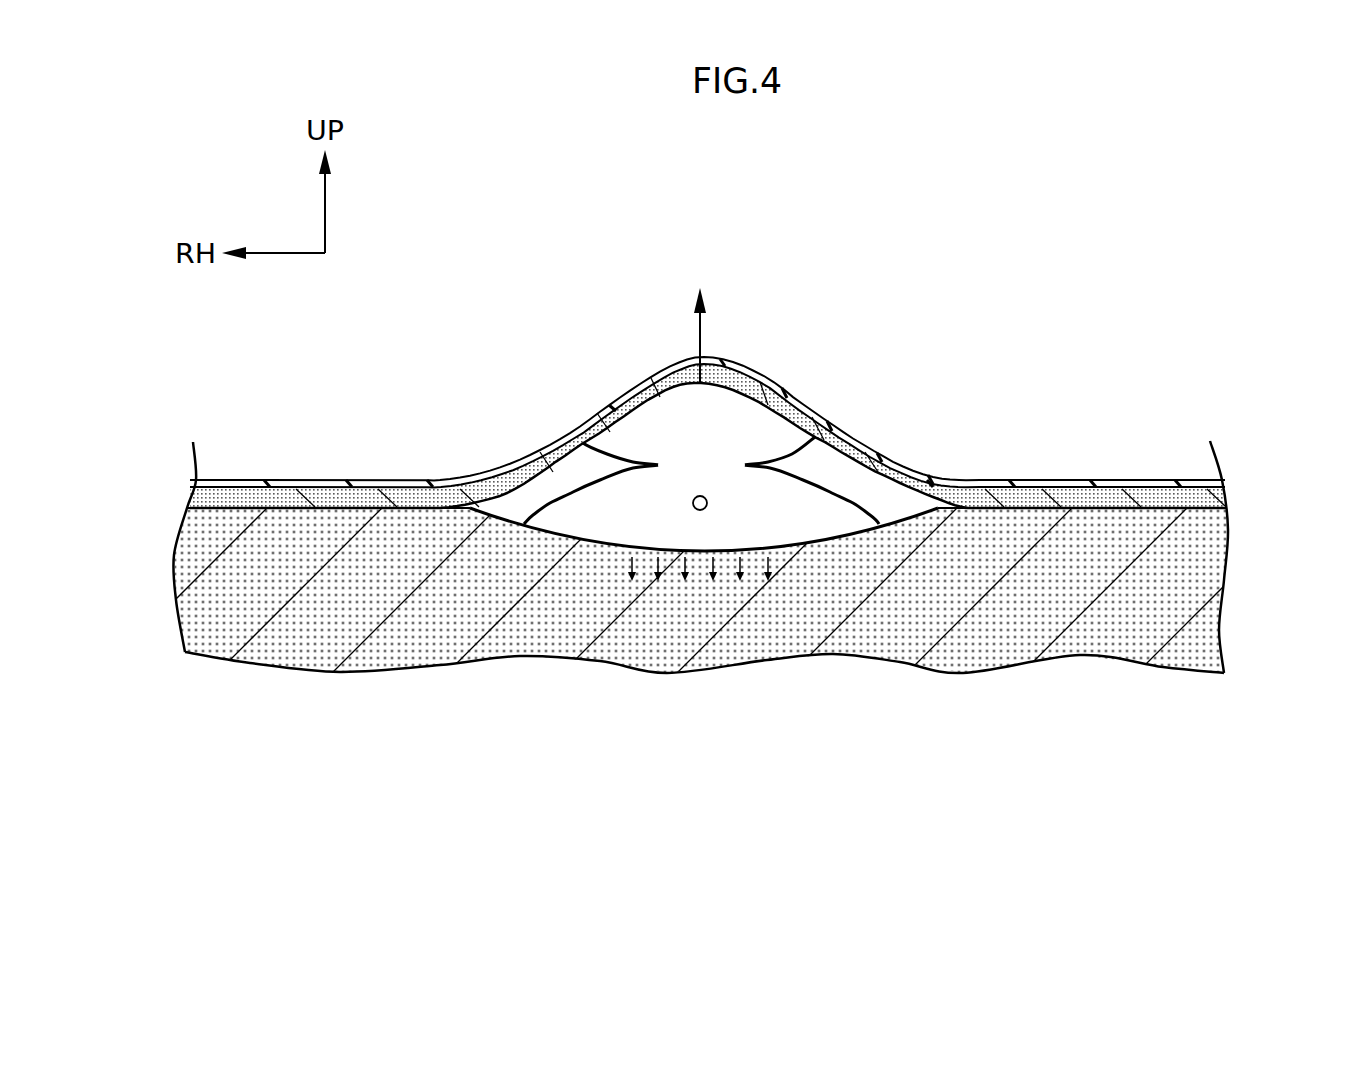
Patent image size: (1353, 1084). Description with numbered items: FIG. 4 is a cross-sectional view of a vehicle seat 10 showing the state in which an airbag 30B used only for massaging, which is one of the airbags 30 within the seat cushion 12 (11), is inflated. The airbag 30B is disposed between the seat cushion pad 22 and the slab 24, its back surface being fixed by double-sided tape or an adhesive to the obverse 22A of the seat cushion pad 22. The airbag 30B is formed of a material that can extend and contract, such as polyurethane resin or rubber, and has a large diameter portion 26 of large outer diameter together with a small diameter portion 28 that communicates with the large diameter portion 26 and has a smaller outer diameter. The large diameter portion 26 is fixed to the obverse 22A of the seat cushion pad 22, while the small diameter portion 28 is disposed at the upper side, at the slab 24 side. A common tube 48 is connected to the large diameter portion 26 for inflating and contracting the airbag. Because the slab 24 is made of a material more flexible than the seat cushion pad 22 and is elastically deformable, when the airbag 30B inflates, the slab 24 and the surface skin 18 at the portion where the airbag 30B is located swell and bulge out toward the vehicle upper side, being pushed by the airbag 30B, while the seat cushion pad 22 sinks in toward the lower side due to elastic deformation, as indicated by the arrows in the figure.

The vehicle interior structure 10 is at (374, 398).
The airbag device 11 is at (707, 432).
The seat cushion 12 is at (448, 450).
The surface skin 18 is at (1090, 484).
The seat cushion pad 22 is at (455, 632).
The obverse of seat cushion pad 22A is at (974, 505).
The slab 24 is at (1040, 496).
The large diameter portion 26 is at (757, 510).
The small diameter portion 28 is at (744, 405).
The airbag 30 is at (739, 427).
The airbag 30B is at (837, 482).
The common tube 48 is at (692, 504).